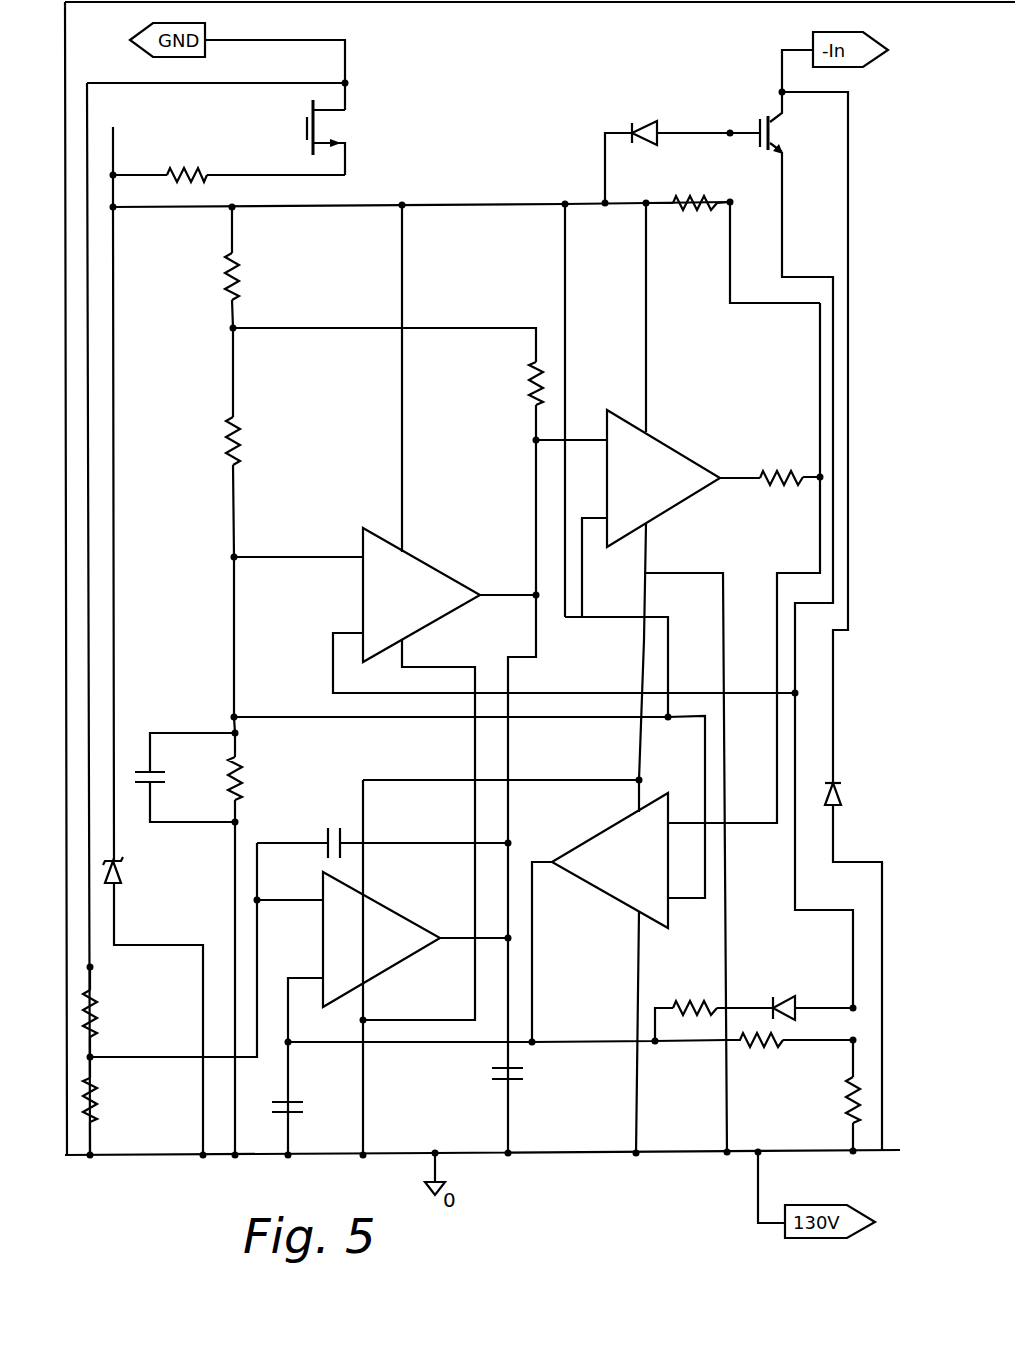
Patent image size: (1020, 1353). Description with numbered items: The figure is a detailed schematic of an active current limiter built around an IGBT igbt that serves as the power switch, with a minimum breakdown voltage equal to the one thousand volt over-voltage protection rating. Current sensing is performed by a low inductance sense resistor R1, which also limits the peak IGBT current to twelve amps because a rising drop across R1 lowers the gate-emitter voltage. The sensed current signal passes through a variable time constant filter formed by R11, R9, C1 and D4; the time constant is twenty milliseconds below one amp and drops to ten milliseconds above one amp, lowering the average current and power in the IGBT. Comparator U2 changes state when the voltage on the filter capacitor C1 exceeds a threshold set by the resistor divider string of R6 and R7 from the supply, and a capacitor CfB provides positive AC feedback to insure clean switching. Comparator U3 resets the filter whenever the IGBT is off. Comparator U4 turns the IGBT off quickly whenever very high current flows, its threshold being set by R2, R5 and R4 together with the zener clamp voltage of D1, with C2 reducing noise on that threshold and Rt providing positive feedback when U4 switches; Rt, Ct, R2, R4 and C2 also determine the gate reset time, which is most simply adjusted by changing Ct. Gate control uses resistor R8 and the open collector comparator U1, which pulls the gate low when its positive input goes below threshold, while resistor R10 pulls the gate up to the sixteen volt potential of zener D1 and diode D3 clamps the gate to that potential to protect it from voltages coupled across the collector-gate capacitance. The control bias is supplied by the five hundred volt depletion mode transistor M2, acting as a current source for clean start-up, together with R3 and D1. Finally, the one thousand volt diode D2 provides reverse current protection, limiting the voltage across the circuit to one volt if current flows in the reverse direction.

The depletion mode transistor M2 is at (347, 137).
The resistor R3 is at (229, 161).
The resistor R2 is at (202, 274).
The resistor R5 is at (200, 439).
The resistor Rt is at (504, 381).
The resistor R4 is at (265, 776).
The resistor R6 is at (119, 1013).
The resistor R7 is at (121, 1099).
The resistor R10 is at (695, 234).
The resistor R8 is at (781, 506).
The resistor R11 is at (697, 979).
The resistor R9 is at (758, 1068).
The current sense resistor R1 is at (826, 1098).
The capacitor C2 is at (178, 779).
The feedback capacitor CfB is at (336, 814).
The filter capacitor C1 is at (315, 1113).
The capacitor Ct is at (487, 1079).
The zener diode D1 is at (141, 881).
The diode D2 is at (852, 797).
The diode D3 is at (646, 118).
The diode D4 is at (787, 991).
The IGBT igbt is at (796, 123).
The open collector comparator U1 is at (663, 478).
The comparator U2 is at (381, 939).
The comparator U3 is at (612, 860).
The comparator U4 is at (421, 595).